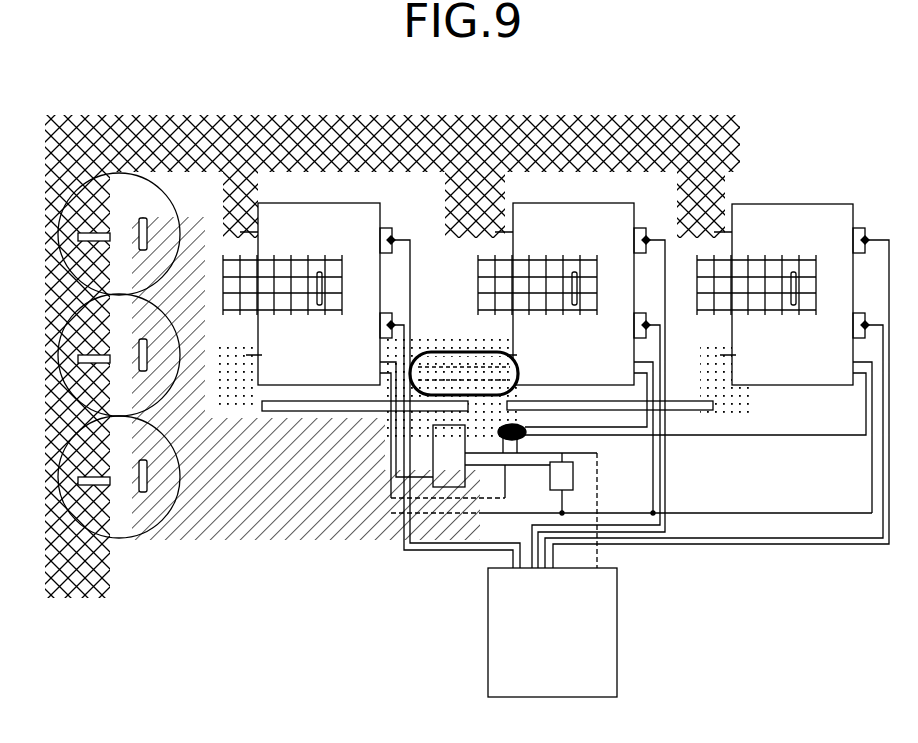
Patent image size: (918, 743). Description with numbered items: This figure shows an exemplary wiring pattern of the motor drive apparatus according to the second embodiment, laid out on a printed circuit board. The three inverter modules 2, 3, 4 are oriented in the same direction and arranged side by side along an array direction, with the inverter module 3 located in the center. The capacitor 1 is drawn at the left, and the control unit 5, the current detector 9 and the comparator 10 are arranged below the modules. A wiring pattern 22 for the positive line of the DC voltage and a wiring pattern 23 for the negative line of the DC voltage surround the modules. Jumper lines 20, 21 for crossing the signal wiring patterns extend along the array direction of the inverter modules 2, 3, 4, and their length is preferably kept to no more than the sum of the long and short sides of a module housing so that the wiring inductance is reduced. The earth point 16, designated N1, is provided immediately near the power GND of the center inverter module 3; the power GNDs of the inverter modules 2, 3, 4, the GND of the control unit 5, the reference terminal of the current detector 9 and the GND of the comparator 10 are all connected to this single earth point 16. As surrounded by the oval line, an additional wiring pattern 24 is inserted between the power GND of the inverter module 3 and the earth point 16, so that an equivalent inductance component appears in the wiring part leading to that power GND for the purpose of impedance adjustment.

The capacitor 1 is at (58, 238).
The inverter module 2 is at (325, 203).
The inverter module 3 is at (600, 203).
The inverter module 4 is at (820, 204).
The control unit 5 is at (488, 688).
The current detector 9 is at (449, 488).
The comparator 10 is at (573, 480).
The earth point 16 is at (524, 436).
The jumper line 20 is at (318, 412).
The jumper line 21 is at (684, 411).
The wiring pattern 22 is at (200, 152).
The wiring pattern 23 is at (193, 530).
The wiring pattern 24 is at (445, 352).